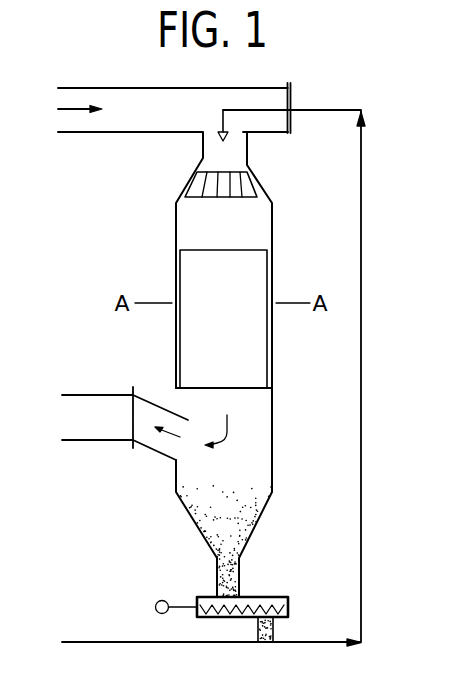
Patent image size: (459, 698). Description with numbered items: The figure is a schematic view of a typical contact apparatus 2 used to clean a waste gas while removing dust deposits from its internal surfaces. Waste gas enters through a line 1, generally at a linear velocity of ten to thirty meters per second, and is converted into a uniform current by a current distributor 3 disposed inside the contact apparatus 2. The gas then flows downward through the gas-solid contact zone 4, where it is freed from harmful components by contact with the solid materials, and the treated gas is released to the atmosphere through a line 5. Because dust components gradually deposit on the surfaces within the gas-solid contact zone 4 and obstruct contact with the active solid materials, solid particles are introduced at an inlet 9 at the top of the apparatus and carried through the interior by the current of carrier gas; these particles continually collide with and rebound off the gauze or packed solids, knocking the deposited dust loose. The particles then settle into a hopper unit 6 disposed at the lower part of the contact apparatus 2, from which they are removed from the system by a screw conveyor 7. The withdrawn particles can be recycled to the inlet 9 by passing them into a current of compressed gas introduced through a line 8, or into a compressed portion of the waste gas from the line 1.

The line 1 is at (72, 110).
The contact apparatus 2 is at (273, 257).
The current distributor 3 is at (242, 188).
The gas-solid contact zone 4 is at (253, 351).
The line 5 is at (98, 403).
The hopper unit 6 is at (233, 528).
The screw conveyor 7 is at (253, 603).
The line 8 is at (84, 643).
The inlet 9 is at (228, 138).